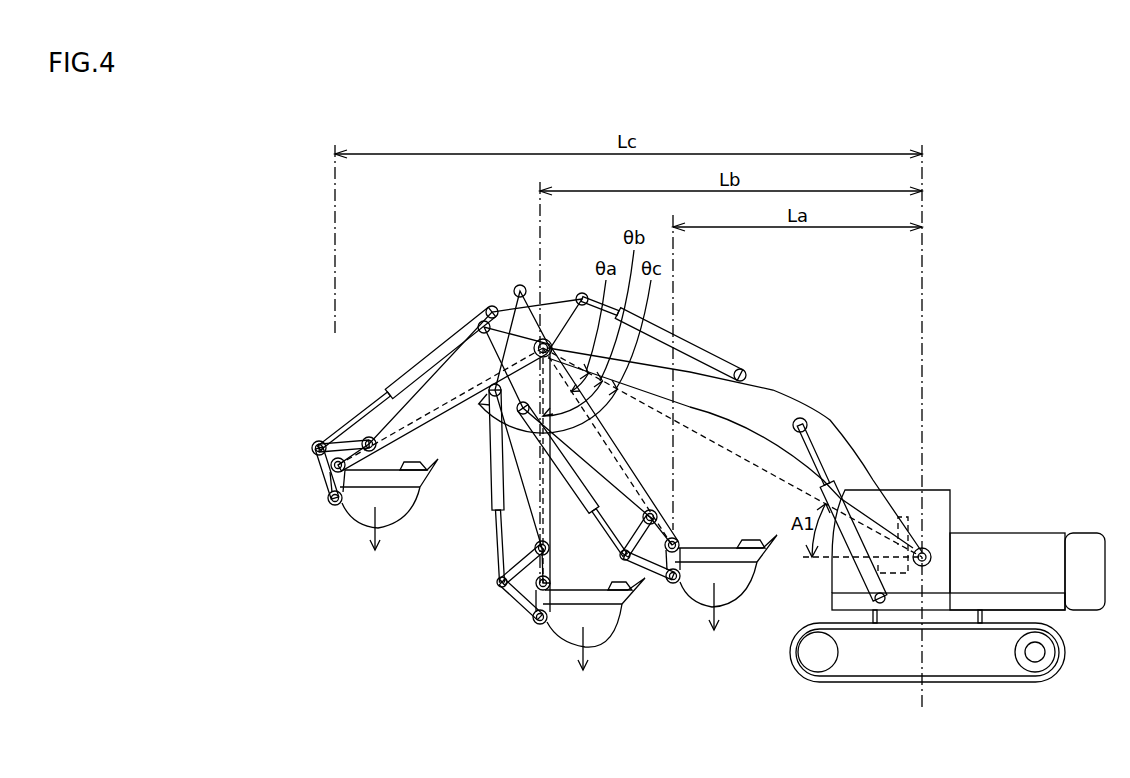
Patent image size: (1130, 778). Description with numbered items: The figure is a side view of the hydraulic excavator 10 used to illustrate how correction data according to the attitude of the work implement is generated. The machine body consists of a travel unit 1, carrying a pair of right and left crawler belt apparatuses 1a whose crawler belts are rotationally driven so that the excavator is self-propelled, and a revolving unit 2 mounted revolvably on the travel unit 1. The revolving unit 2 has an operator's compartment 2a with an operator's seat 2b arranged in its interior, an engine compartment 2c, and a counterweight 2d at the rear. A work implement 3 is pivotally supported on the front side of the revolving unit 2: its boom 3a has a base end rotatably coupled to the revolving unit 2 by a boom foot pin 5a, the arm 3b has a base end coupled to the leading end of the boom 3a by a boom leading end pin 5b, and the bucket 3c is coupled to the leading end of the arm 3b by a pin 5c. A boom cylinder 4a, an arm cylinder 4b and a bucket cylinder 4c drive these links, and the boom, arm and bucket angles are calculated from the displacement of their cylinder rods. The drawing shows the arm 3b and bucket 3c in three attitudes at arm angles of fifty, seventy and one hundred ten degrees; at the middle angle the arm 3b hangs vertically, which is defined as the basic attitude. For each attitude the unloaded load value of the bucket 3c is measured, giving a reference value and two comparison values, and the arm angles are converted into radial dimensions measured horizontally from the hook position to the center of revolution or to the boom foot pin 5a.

The travel unit 1 is at (927, 679).
The crawler belt apparatus 1a is at (990, 683).
The revolving unit 2 is at (968, 529).
The operator's compartment 2a is at (935, 490).
The operator's seat 2b is at (908, 517).
The engine compartment 2c is at (1043, 545).
The counterweight 2d is at (1082, 550).
The work implement 3 is at (768, 436).
The boom 3a is at (798, 405).
The arm 3b is at (505, 424).
The bucket 3c is at (362, 508).
The boom cylinder 4a is at (866, 578).
The arm cylinder 4b is at (697, 345).
The bucket cylinder 4c is at (430, 365).
The boom foot pin 5a is at (930, 553).
The boom leading end pin 5b is at (551, 338).
The pin 5c is at (322, 443).
The hydraulic excavator 10 is at (958, 420).